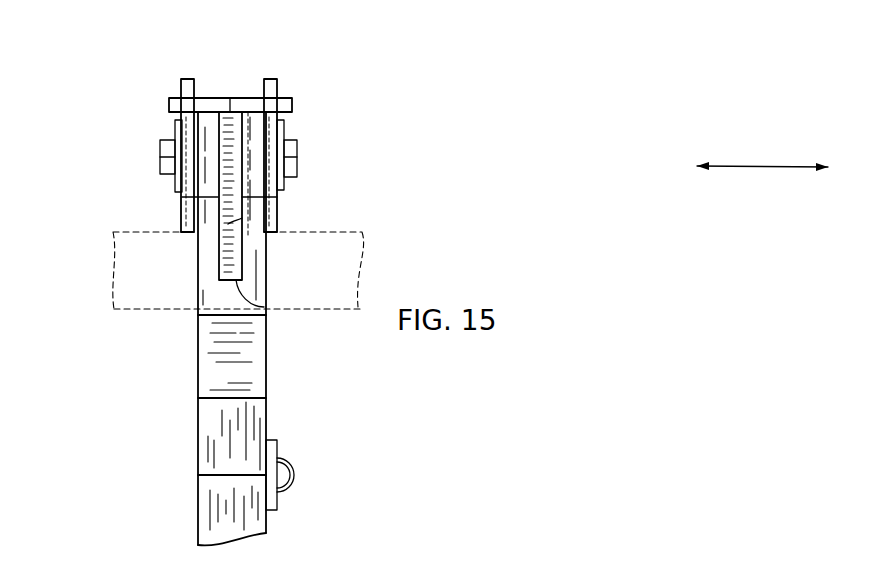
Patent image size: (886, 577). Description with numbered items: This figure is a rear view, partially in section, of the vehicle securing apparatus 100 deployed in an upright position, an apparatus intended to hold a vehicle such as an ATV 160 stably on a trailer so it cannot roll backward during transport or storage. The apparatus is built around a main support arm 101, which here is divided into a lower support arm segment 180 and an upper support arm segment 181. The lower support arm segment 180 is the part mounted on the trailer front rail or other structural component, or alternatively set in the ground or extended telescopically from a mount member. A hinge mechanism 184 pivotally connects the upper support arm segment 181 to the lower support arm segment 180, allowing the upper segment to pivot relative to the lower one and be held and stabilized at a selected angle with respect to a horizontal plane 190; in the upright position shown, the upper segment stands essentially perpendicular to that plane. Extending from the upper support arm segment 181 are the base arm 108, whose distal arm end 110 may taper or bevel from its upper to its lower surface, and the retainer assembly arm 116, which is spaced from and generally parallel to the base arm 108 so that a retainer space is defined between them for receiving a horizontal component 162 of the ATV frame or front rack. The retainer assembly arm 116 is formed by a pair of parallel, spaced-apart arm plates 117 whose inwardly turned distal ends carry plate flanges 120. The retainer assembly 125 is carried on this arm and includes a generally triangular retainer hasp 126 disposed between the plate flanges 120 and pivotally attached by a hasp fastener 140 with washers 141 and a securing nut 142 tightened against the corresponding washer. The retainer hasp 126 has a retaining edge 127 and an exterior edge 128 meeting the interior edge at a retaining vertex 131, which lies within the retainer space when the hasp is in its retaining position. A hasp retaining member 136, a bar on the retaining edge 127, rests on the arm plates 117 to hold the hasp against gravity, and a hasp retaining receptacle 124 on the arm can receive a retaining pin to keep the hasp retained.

The vehicle securing apparatus 100 is at (117, 84).
The main support arm 101 is at (218, 474).
The base arm 108 is at (190, 365).
The distal arm end 110 is at (232, 372).
The retainer assembly arm 116 is at (168, 253).
The arm plates 117 is at (172, 216).
The plate flanges 120 is at (175, 124).
The hasp retaining receptacle 124 is at (268, 98).
The retainer assembly 125 is at (326, 126).
The retainer hasp 126 is at (257, 257).
The retaining edge 127 is at (245, 62).
The exterior edge 128 is at (228, 224).
The retaining vertex 131 is at (262, 306).
The hasp retaining member 136 is at (169, 103).
The hasp fastener 140 is at (297, 168).
The washers 141 is at (175, 189).
The securing nut 142 is at (160, 165).
The ATV 160 is at (293, 318).
The horizontal component 162 is at (146, 317).
The lower support arm segment 180 is at (213, 521).
The upper support arm segment 181 is at (215, 428).
The hinge mechanism 184 is at (295, 474).
The horizontal plane 190 is at (783, 167).